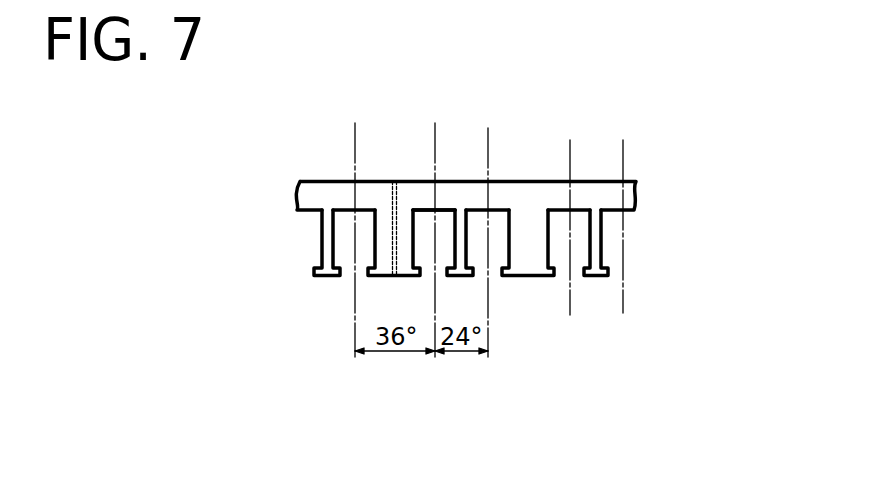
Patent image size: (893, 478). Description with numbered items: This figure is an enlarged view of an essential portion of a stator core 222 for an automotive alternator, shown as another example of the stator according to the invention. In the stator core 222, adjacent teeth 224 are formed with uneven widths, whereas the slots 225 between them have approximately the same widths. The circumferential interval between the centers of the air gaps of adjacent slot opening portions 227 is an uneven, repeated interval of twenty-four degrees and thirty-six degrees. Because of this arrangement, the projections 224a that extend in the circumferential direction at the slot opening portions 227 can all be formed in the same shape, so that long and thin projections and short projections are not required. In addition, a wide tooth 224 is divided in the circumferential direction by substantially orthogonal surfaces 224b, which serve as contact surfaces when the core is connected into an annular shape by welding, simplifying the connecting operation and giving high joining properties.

The stator core 222 is at (305, 216).
The tooth 224 is at (318, 255).
The projection 224a is at (478, 273).
The orthogonal surface 224b is at (397, 181).
The slot 225 is at (422, 222).
The slot opening portion 227 is at (430, 285).